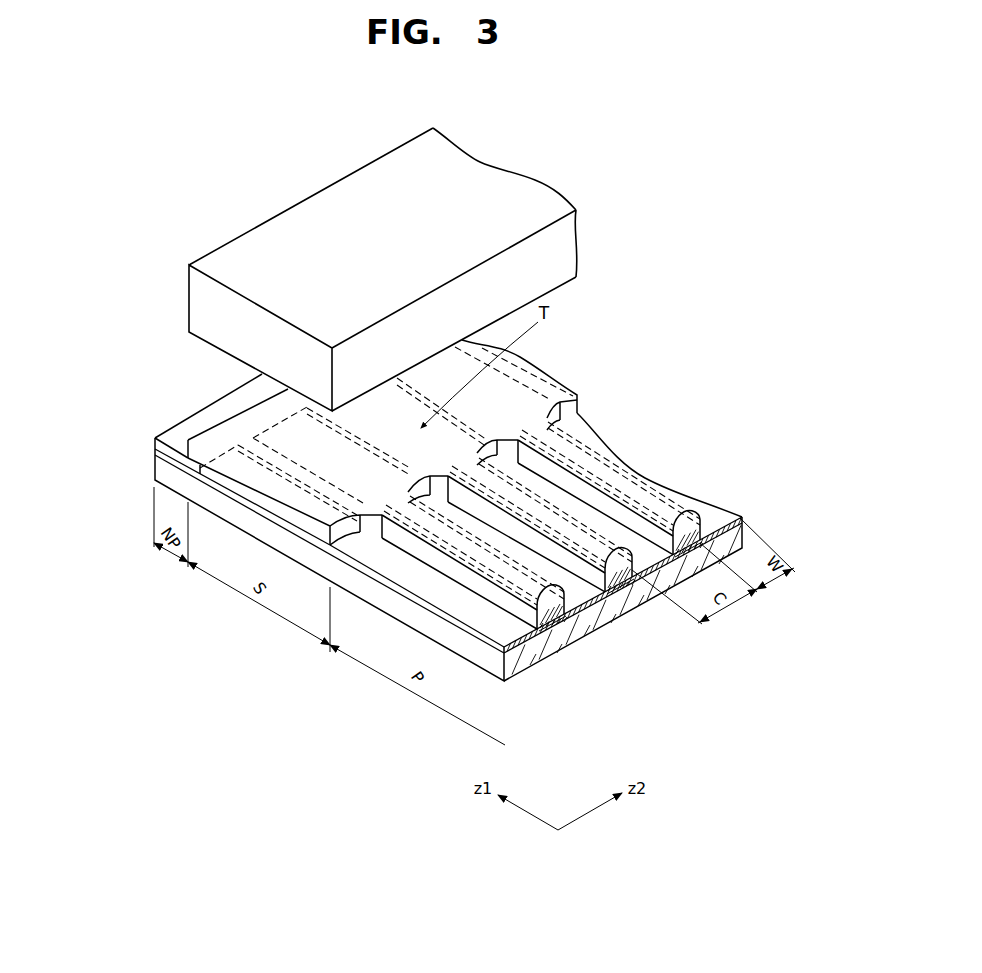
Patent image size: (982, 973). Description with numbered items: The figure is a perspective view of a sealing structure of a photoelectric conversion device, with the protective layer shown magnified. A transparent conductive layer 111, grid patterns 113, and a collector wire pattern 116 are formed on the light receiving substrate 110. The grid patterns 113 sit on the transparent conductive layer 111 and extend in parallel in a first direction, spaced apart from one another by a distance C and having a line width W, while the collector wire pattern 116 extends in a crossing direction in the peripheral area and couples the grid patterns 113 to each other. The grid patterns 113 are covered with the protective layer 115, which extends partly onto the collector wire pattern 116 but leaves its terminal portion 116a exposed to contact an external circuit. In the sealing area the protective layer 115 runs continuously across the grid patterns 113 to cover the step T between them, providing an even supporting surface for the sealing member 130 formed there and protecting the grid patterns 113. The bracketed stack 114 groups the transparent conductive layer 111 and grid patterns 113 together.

The light receiving substrate 110 is at (738, 535).
The transparent conductive layer 111 is at (528, 651).
The grid patterns 113 is at (555, 633).
The layer stack 114 is at (623, 643).
The protective layer 115 is at (587, 623).
The collector wire pattern 116 is at (162, 453).
The terminal portion of the collector wire pattern 116a is at (178, 440).
The sealing member 130 is at (189, 297).